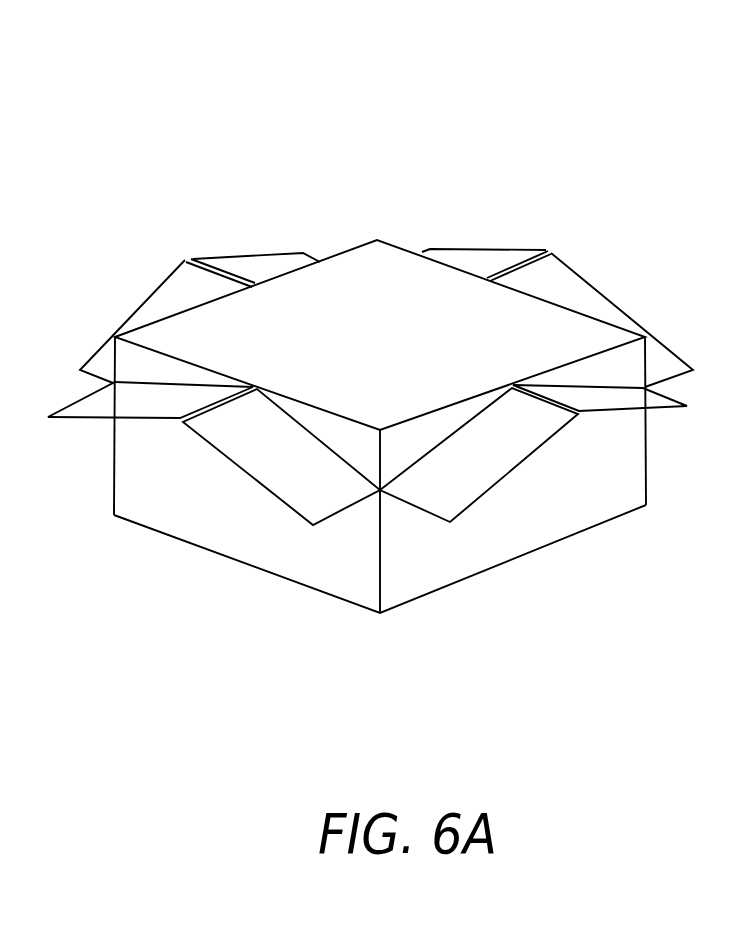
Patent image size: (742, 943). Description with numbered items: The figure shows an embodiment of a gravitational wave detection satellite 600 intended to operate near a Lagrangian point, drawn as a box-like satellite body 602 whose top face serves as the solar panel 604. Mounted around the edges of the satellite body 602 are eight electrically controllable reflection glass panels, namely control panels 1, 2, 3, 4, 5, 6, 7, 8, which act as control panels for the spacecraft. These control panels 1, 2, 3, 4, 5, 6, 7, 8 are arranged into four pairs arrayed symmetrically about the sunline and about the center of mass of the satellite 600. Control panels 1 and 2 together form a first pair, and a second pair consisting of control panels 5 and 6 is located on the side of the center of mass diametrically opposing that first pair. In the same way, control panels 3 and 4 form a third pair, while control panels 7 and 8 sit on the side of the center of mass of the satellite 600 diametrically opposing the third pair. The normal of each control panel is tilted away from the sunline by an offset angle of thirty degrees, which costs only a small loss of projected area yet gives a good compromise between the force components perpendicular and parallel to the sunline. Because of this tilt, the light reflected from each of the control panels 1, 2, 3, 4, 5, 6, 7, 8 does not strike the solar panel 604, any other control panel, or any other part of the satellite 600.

The satellite 600 is at (341, 92).
The satellite body 602 is at (317, 592).
The solar panel 604 is at (370, 258).
The control panel 1 is at (486, 265).
The control panel 2 is at (622, 320).
The control panel 3 is at (600, 398).
The control panel 4 is at (479, 455).
The control panel 5 is at (281, 457).
The control panel 6 is at (150, 400).
The control panel 7 is at (167, 321).
The control panel 8 is at (256, 268).